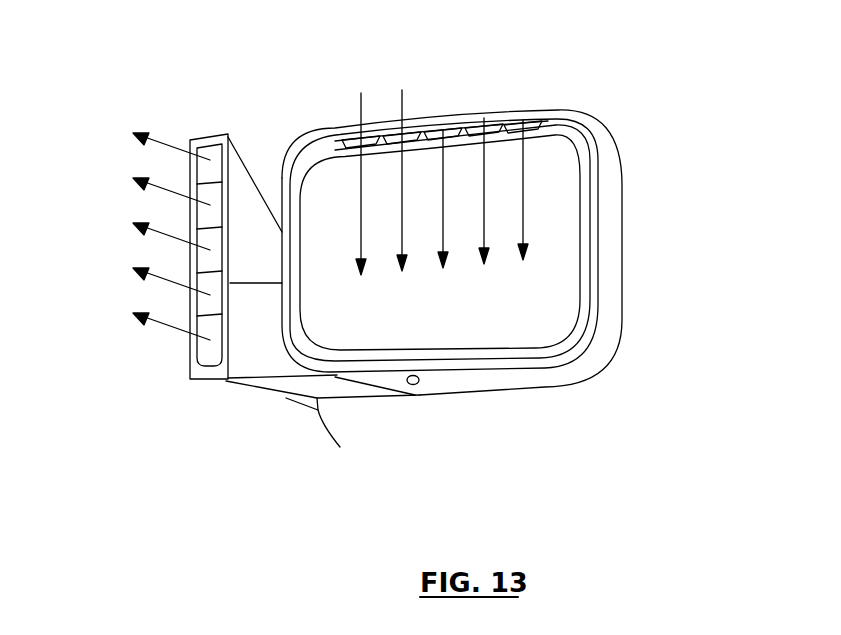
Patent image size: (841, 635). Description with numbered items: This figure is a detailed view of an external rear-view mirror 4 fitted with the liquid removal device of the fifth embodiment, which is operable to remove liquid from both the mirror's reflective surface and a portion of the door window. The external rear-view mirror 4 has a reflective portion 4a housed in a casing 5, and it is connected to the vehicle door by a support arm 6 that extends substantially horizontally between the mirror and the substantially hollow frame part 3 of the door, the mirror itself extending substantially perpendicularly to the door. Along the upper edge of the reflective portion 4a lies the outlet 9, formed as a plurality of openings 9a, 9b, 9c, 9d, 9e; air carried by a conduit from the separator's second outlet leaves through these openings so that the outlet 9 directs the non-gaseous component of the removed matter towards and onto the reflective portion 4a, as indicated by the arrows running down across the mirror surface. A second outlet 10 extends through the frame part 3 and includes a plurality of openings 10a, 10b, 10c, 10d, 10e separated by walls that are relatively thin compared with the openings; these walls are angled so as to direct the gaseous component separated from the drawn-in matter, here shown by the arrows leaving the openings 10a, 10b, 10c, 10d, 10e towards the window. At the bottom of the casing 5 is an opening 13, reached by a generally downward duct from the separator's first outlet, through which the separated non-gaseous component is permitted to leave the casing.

The frame part 3 is at (243, 208).
The external rear-view mirror 4 is at (613, 319).
The reflective portion 4a is at (555, 170).
The casing 5 is at (622, 195).
The support arm 6 is at (272, 338).
The outlet 9 is at (432, 137).
The opening of outlet 9a is at (524, 120).
The opening of outlet 9b is at (486, 118).
The opening of outlet 9c is at (443, 131).
The opening of outlet 9d is at (402, 171).
The opening of outlet 9e is at (361, 174).
The outlet 10 is at (219, 292).
The opening 10a is at (203, 170).
The opening 10b is at (208, 213).
The opening 10c is at (206, 266).
The opening 10d is at (207, 303).
The opening 10e is at (207, 350).
The opening 13 is at (417, 390).